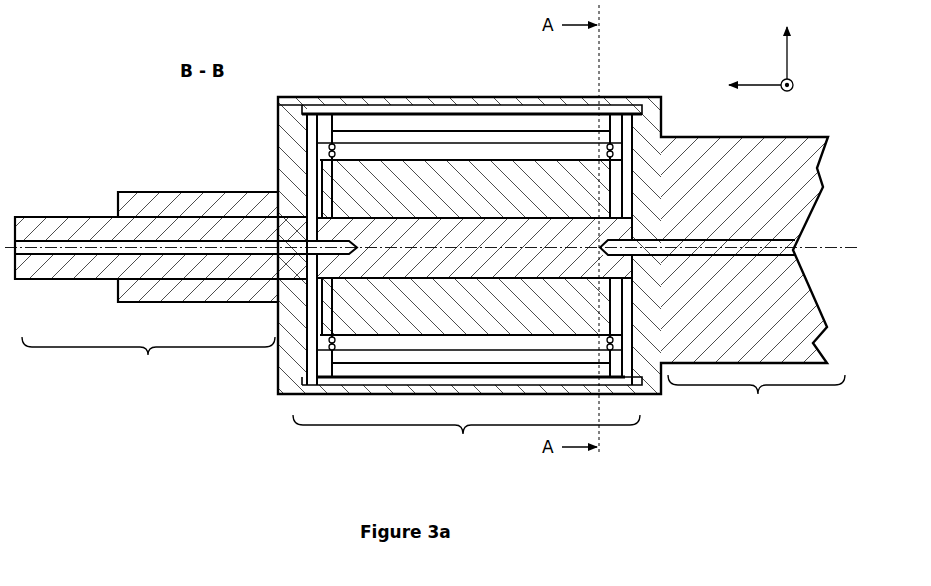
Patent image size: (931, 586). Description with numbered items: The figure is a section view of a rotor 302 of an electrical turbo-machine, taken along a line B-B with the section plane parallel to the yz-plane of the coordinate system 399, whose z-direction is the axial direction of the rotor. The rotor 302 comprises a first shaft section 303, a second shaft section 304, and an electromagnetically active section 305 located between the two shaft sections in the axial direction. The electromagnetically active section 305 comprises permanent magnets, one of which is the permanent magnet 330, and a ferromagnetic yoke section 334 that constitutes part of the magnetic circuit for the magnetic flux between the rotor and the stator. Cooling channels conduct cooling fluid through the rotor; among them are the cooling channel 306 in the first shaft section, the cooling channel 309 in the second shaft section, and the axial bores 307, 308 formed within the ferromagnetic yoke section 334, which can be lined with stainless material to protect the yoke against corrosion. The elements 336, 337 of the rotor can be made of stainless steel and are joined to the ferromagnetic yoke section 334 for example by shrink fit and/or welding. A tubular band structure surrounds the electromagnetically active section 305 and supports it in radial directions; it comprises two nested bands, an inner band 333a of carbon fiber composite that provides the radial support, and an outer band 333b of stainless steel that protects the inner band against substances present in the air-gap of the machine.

The rotor 302 is at (118, 111).
The first shaft section 303 is at (148, 361).
The second shaft section 304 is at (756, 401).
The electromagnetically active section 305 is at (466, 441).
The cooling channel 306 is at (108, 256).
The axial bore 307 is at (378, 162).
The axial bore 308 is at (422, 333).
The cooling channel 309 is at (683, 262).
The permanent magnet 330 is at (498, 118).
The inner band 333a is at (369, 114).
The outer band 333b is at (449, 97).
The ferromagnetic yoke section 334 is at (471, 247).
The rotor element 336 is at (230, 190).
The rotor element 337 is at (553, 245).
The coordinate system 399 is at (758, 54).